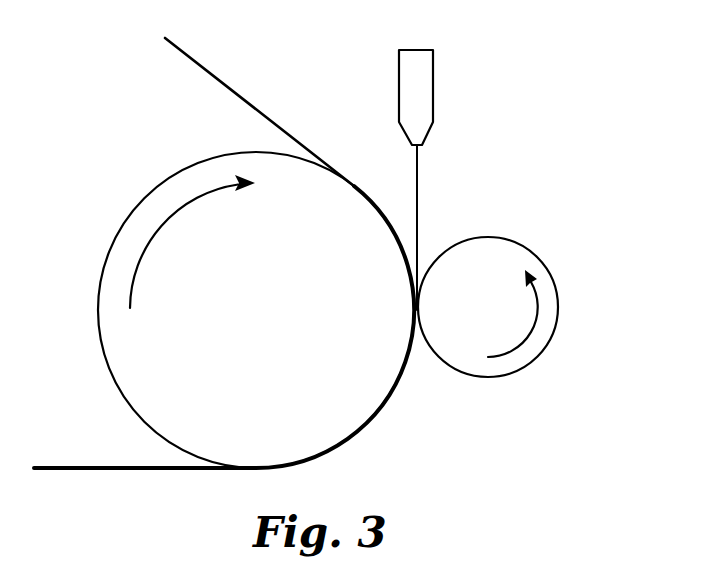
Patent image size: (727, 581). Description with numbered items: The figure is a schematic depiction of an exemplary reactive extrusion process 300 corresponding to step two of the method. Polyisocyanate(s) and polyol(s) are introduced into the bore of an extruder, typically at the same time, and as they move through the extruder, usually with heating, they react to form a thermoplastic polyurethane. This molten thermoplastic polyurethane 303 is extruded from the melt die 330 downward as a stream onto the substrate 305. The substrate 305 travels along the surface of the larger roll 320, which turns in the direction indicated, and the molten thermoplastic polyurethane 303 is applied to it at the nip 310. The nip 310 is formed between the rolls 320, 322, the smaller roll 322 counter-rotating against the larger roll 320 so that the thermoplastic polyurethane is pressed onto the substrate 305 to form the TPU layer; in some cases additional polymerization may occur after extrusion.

The process 300 is at (547, 156).
The molten thermoplastic polyurethane 303 is at (417, 200).
The substrate 305 is at (215, 75).
The nip 310 is at (420, 352).
The roll 320 is at (180, 188).
The roll 322 is at (510, 253).
The melt die 330 is at (433, 82).